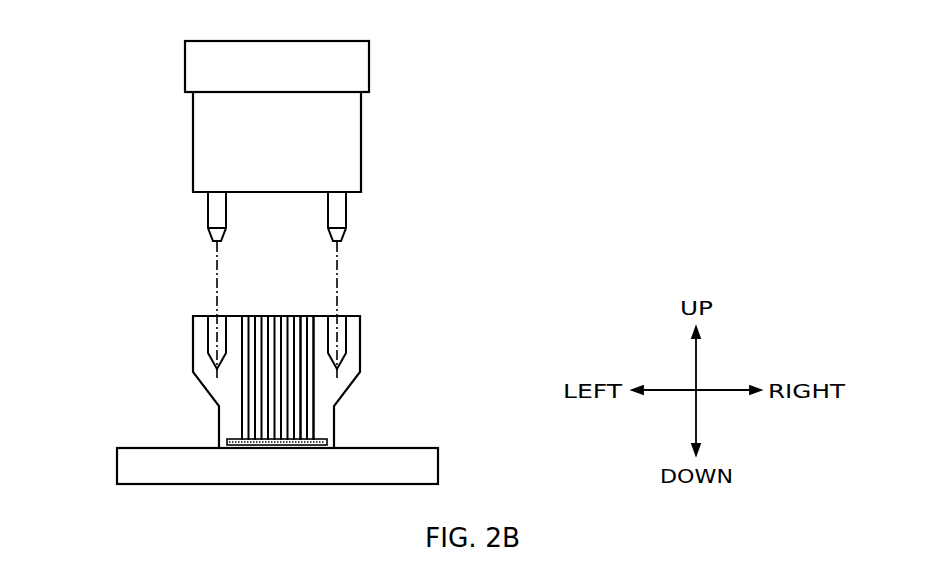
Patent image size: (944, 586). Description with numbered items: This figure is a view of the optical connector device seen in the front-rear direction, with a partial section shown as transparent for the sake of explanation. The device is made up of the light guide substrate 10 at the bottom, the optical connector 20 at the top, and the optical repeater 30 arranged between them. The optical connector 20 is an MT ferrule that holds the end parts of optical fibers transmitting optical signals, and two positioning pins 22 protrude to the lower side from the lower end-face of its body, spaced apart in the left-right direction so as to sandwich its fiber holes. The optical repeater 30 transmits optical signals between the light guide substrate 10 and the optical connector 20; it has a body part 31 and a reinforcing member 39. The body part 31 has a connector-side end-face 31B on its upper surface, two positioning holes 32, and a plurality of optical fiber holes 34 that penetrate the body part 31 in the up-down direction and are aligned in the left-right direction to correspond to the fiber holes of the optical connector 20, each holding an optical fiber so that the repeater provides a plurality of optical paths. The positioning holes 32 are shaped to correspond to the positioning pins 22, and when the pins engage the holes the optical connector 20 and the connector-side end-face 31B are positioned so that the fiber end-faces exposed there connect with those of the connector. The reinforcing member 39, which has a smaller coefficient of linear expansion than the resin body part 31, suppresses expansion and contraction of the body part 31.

The light guide substrate 10 is at (128, 438).
The optical connector 20 is at (395, 128).
The positioning pins 22 is at (347, 208).
The optical repeater 30 is at (395, 348).
The body part 31 is at (193, 347).
The connector-side end-face 31B is at (355, 316).
The positioning holes 32 is at (342, 316).
The optical fiber holes 34 is at (313, 387).
The reinforcing member 39 is at (318, 437).